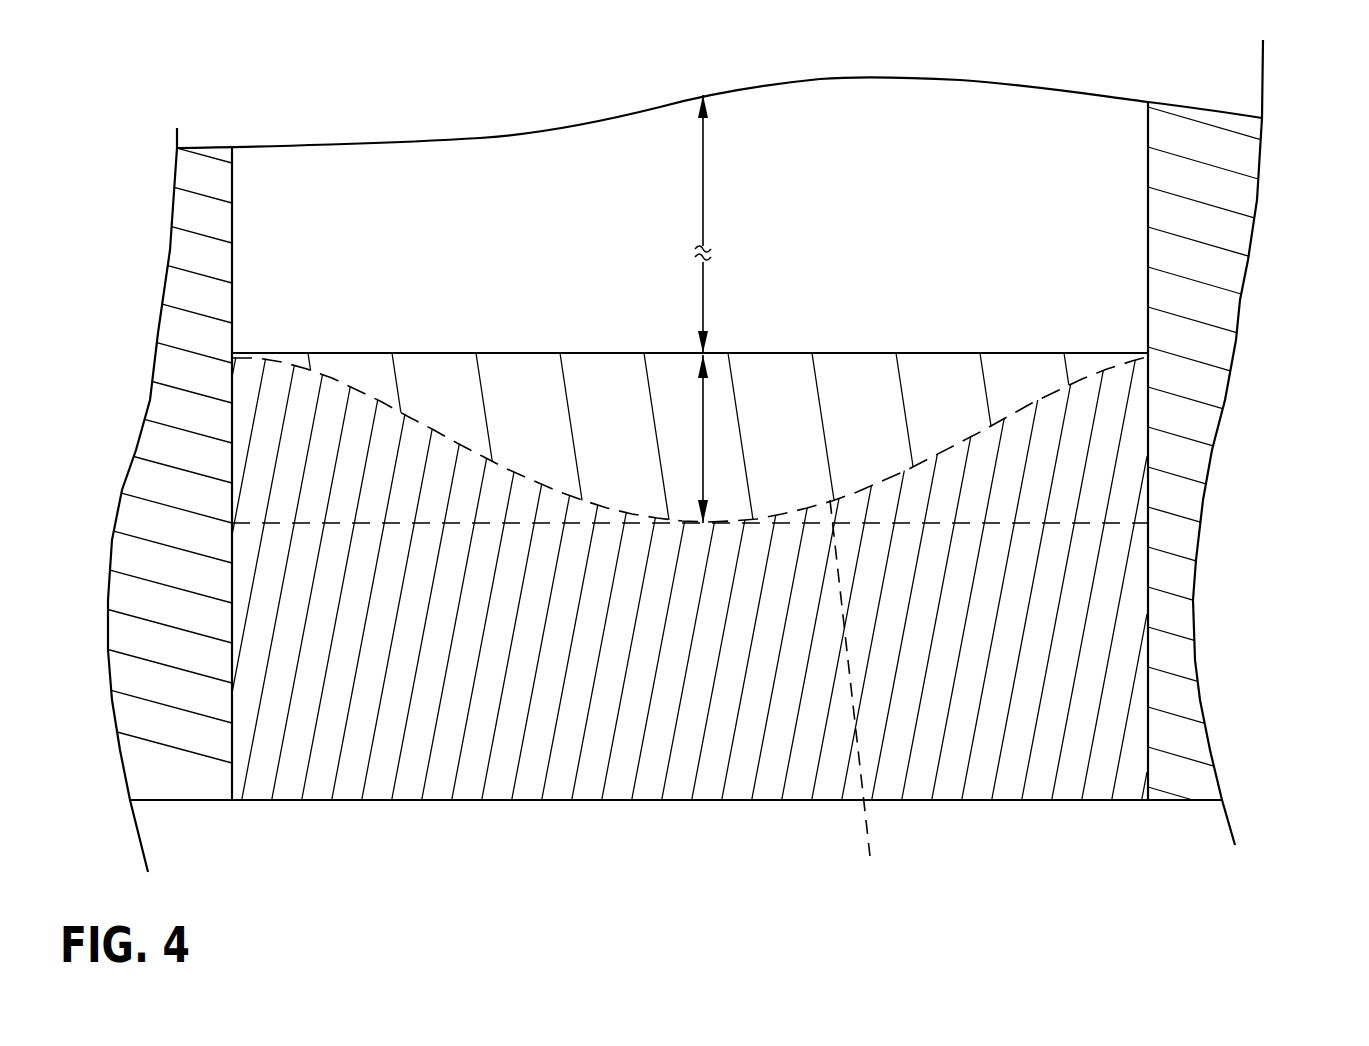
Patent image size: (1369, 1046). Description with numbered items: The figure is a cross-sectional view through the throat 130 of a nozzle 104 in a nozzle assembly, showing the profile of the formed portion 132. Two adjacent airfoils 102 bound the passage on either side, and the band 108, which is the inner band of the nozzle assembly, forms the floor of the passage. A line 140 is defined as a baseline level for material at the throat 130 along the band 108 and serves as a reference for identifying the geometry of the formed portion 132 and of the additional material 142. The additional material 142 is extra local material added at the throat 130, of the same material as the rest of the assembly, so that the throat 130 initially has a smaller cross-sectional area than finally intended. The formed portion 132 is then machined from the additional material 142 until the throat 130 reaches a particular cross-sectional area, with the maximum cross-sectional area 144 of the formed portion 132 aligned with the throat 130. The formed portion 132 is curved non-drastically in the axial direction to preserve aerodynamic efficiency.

The airfoil 102 is at (213, 263).
The nozzle 104 is at (499, 214).
The band 108 is at (437, 752).
The throat 130 is at (703, 180).
The formed portion 132 is at (1028, 400).
The line 140 is at (862, 693).
The additional material 142 is at (777, 353).
The maximum cross-sectional area 144 is at (700, 392).